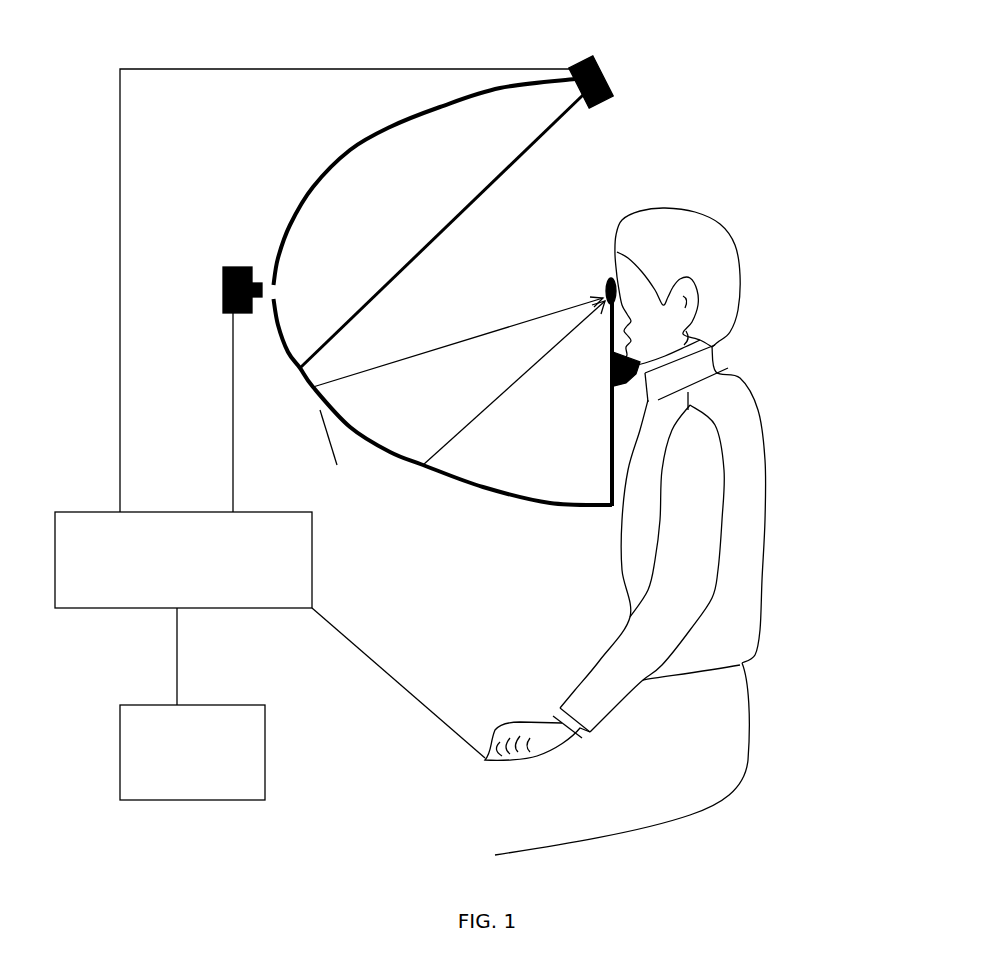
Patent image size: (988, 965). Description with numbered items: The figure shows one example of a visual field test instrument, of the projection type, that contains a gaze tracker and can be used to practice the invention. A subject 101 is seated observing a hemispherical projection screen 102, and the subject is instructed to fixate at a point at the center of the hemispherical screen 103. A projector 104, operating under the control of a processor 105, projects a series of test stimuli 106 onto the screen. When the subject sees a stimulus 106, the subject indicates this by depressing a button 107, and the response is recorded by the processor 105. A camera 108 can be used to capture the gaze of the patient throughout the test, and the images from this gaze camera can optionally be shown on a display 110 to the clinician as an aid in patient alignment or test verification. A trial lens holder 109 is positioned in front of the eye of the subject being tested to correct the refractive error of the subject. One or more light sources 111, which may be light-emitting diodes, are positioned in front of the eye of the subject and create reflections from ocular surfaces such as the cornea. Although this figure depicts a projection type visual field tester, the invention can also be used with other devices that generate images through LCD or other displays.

The subject 101 is at (740, 233).
The hemispherical projection screen 102 is at (390, 127).
The center of the hemispherical screen 103 is at (282, 290).
The projector 104 is at (615, 77).
The processor 105 is at (82, 608).
The test stimuli 106 is at (293, 383).
The button 107 is at (495, 718).
The camera 108 is at (235, 263).
The trial lens holder 109 is at (609, 263).
The display 110 is at (120, 748).
The light sources 111 is at (415, 480).